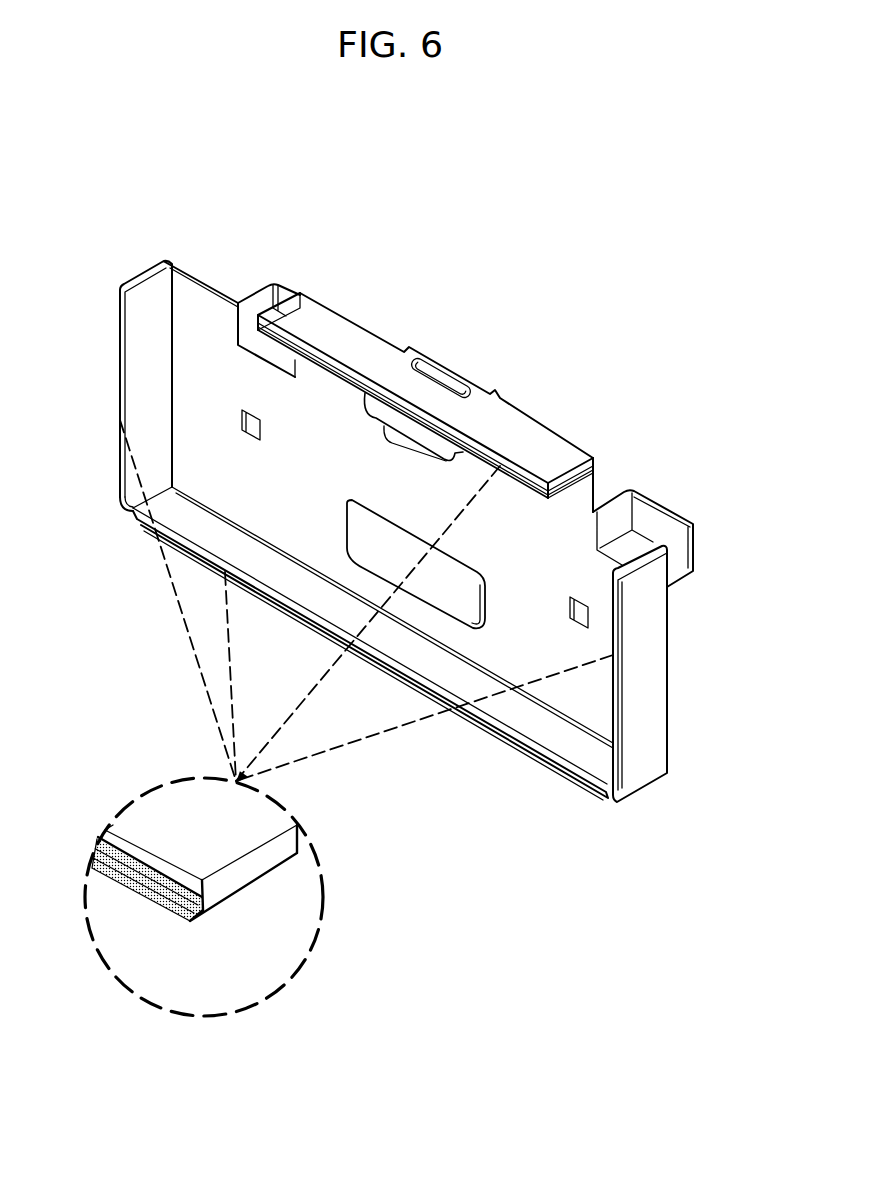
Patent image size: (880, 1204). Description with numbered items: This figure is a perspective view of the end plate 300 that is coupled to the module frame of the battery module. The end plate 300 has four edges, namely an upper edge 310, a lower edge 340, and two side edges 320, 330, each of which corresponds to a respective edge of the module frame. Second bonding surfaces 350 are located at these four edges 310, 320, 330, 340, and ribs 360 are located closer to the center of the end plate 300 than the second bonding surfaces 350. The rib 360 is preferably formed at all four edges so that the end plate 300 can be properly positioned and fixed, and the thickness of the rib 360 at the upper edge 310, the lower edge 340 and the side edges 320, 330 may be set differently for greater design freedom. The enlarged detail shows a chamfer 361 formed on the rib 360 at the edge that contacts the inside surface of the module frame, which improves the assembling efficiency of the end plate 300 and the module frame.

The end plate 300 is at (97, 181).
The upper edge 310 is at (328, 329).
The side edge 320 is at (138, 372).
The side edge 330 is at (653, 700).
The lower edge 340 is at (560, 738).
The second bonding surface 350 is at (139, 851).
The rib 360 is at (193, 906).
The chamfer 361 is at (170, 897).